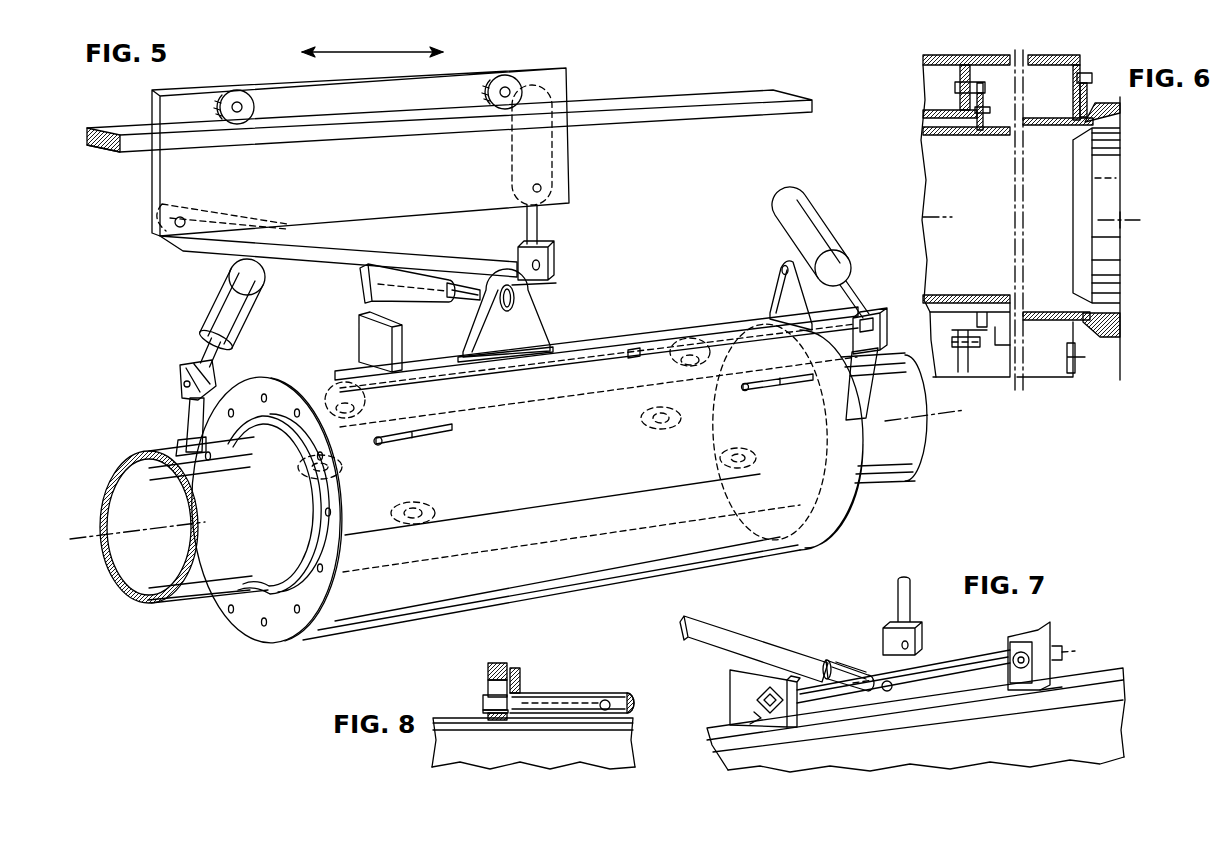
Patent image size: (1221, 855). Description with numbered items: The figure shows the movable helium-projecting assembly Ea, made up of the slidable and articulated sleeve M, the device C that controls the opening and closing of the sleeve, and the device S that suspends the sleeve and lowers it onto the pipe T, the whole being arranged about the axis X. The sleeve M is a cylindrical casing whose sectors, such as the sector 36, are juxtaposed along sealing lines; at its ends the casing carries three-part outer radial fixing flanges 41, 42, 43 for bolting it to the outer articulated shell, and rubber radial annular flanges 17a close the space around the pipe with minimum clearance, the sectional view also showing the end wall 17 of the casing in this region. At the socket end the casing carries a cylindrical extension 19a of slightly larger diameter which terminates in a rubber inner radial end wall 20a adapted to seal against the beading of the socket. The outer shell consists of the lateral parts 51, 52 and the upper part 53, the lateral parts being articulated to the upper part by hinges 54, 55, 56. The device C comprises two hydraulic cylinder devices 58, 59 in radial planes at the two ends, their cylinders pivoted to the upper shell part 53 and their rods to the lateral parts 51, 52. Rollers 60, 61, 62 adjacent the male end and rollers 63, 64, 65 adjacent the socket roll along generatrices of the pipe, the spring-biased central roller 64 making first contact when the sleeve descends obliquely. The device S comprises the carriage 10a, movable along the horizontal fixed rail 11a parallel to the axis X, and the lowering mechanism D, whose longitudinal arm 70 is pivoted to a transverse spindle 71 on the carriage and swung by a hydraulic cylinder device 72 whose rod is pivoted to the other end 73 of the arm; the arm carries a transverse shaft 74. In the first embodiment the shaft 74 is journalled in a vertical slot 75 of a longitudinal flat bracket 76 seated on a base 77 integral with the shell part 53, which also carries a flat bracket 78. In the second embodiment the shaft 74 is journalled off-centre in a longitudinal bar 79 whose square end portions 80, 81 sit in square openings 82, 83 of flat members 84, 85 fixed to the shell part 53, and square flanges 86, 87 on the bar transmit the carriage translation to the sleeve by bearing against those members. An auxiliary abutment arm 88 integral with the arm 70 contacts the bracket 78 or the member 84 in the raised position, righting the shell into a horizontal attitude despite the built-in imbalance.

In FIG. 5, the carriage 10a is at (360, 152).
In FIG. 5, the horizontal fixed rail 11a is at (650, 103).
In FIG. 6, the drum end wall 17 is at (1002, 296).
In FIG. 5, the rubber radial annular flange 17a is at (237, 432).
In FIG. 6, the cylindrical extension 19a is at (1046, 57).
In FIG. 6, the inner radial annular flange or end wall 20a is at (1087, 345).
In FIG. 6, the longitudinal cylindrical sector 36 is at (936, 116).
In FIG. 5, the outer radial fixing flange part 41 is at (180, 446).
In FIG. 6, the outer radial fixing flange part 41 is at (978, 350).
In FIG. 5, the outer radial fixing flange part 42 is at (248, 396).
In FIG. 5, the outer radial fixing flange part 43 is at (322, 552).
In FIG. 5, the lateral shell part 51 is at (188, 430).
In FIG. 6, the lateral shell part 51 is at (948, 370).
In FIG. 5, the lateral shell part 52 is at (583, 480).
In FIG. 5, the upper shell part 53 is at (596, 367).
In FIG. 6, the upper shell part 53 is at (941, 67).
In FIG. 7, the upper shell part 53 is at (916, 720).
In FIG. 8, the upper shell part 53 is at (533, 743).
In FIG. 5, the hinge 54 is at (768, 389).
In FIG. 5, the hinge 55 is at (412, 433).
In FIG. 5, the hinge 56 is at (638, 349).
In FIG. 5, the hydraulic cylinder device 58 is at (226, 304).
In FIG. 5, the hydraulic cylinder device 59 is at (806, 236).
In FIG. 5, the roller 60 is at (343, 471).
In FIG. 5, the roller 61 is at (338, 385).
In FIG. 5, the roller 62 is at (436, 516).
In FIG. 5, the roller 63 is at (660, 429).
In FIG. 5, the central roller 64 is at (690, 345).
In FIG. 5, the roller 65 is at (761, 447).
In FIG. 5, the longitudinal arm 70 is at (305, 254).
In FIG. 5, the transverse spindle 71 is at (183, 216).
In FIG. 5, the hydraulic cylinder device 72 is at (513, 170).
In FIG. 5, the end of the arm 73 is at (541, 264).
In FIG. 5, the transverse shaft 74 is at (478, 290).
In FIG. 7, the transverse shaft 74 is at (847, 666).
In FIG. 8, the transverse shaft 74 is at (608, 701).
In FIG. 5, the vertical slot 75 is at (516, 300).
In FIG. 5, the longitudinal flat bracket 76 is at (525, 344).
In FIG. 5, the base plate 77 is at (517, 362).
In FIG. 5, the flat attached bracket 78 is at (396, 346).
In FIG. 7, the longitudinal bar 79 is at (955, 678).
In FIG. 8, the longitudinal bar 79 is at (578, 694).
In FIG. 7, the square portion 80 is at (755, 717).
In FIG. 8, the square portion 80 is at (484, 703).
In FIG. 7, the square portion 81 is at (1060, 690).
In FIG. 7, the square opening 82 is at (757, 701).
In FIG. 8, the square opening 82 is at (491, 689).
In FIG. 7, the square opening 83 is at (1078, 646).
In FIG. 7, the flat member 84 is at (745, 700).
In FIG. 8, the flat member 84 is at (498, 662).
In FIG. 7, the flat member 85 is at (1055, 632).
In FIG. 7, the square flange 86 is at (798, 716).
In FIG. 8, the square flange 86 is at (518, 682).
In FIG. 7, the square flange 87 is at (1014, 655).
In FIG. 5, the auxiliary abutment arm 88 is at (418, 278).
In FIG. 7, the auxiliary abutment arm 88 is at (776, 662).
In FIG. 5, the suspending or supporting device S is at (584, 194).
In FIG. 5, the opening and closing control device C is at (820, 207).
In FIG. 5, the lowering mechanism D is at (360, 302).
In FIG. 5, the movable helium-projecting assembly Ea is at (578, 302).
In FIG. 5, the sleeve M is at (727, 321).
In FIG. 5, the pipe T is at (887, 478).
In FIG. 6, the pipe T is at (957, 140).
In FIG. 5, the axis X is at (96, 532).
In FIG. 6, the axis X is at (916, 216).